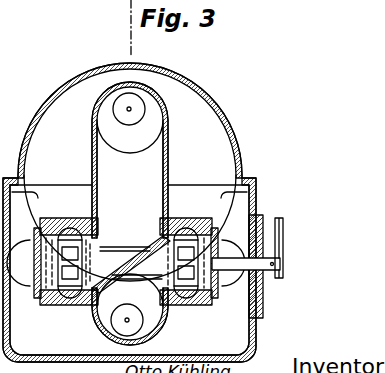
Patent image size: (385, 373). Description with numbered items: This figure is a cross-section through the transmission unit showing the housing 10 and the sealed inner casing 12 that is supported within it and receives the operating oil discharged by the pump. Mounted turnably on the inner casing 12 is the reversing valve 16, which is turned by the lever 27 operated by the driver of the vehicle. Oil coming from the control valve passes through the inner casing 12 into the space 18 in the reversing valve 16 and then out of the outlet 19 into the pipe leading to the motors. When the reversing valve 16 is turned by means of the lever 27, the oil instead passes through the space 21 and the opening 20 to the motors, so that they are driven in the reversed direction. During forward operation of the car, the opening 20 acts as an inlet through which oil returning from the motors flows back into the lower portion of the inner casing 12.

The housing 10 is at (172, 78).
The inner casing 12 is at (168, 140).
The reversing valve 16 is at (91, 316).
The space 18 is at (80, 222).
The outlet 19 is at (72, 306).
The opening 20 is at (170, 306).
The space 21 is at (156, 326).
The lever 27 is at (277, 226).